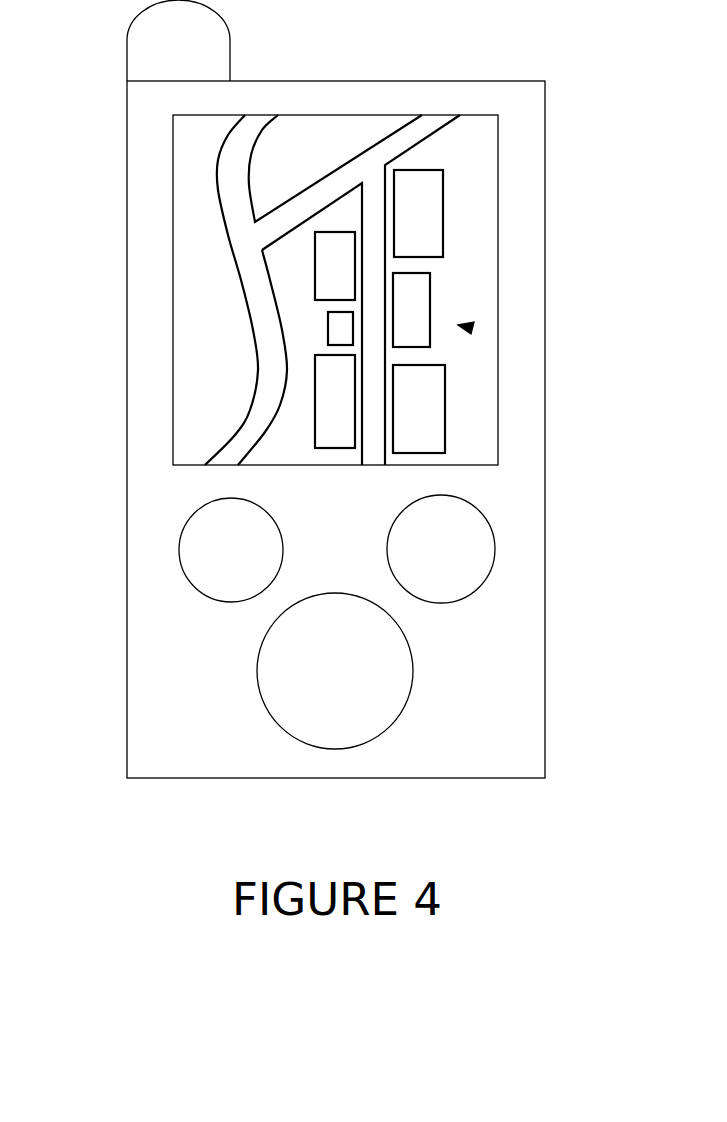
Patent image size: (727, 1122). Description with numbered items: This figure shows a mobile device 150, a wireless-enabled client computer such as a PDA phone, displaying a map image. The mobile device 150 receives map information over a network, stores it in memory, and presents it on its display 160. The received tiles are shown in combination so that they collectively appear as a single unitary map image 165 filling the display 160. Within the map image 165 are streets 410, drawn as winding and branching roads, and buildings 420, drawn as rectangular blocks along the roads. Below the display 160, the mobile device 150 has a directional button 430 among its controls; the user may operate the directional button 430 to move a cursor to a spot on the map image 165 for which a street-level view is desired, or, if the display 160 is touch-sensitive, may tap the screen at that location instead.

The mobile device 150 is at (127, 563).
The display 160 is at (172, 303).
The map image 165 is at (473, 329).
The streets 410 is at (422, 132).
The buildings 420 is at (422, 202).
The directional button 430 is at (257, 682).